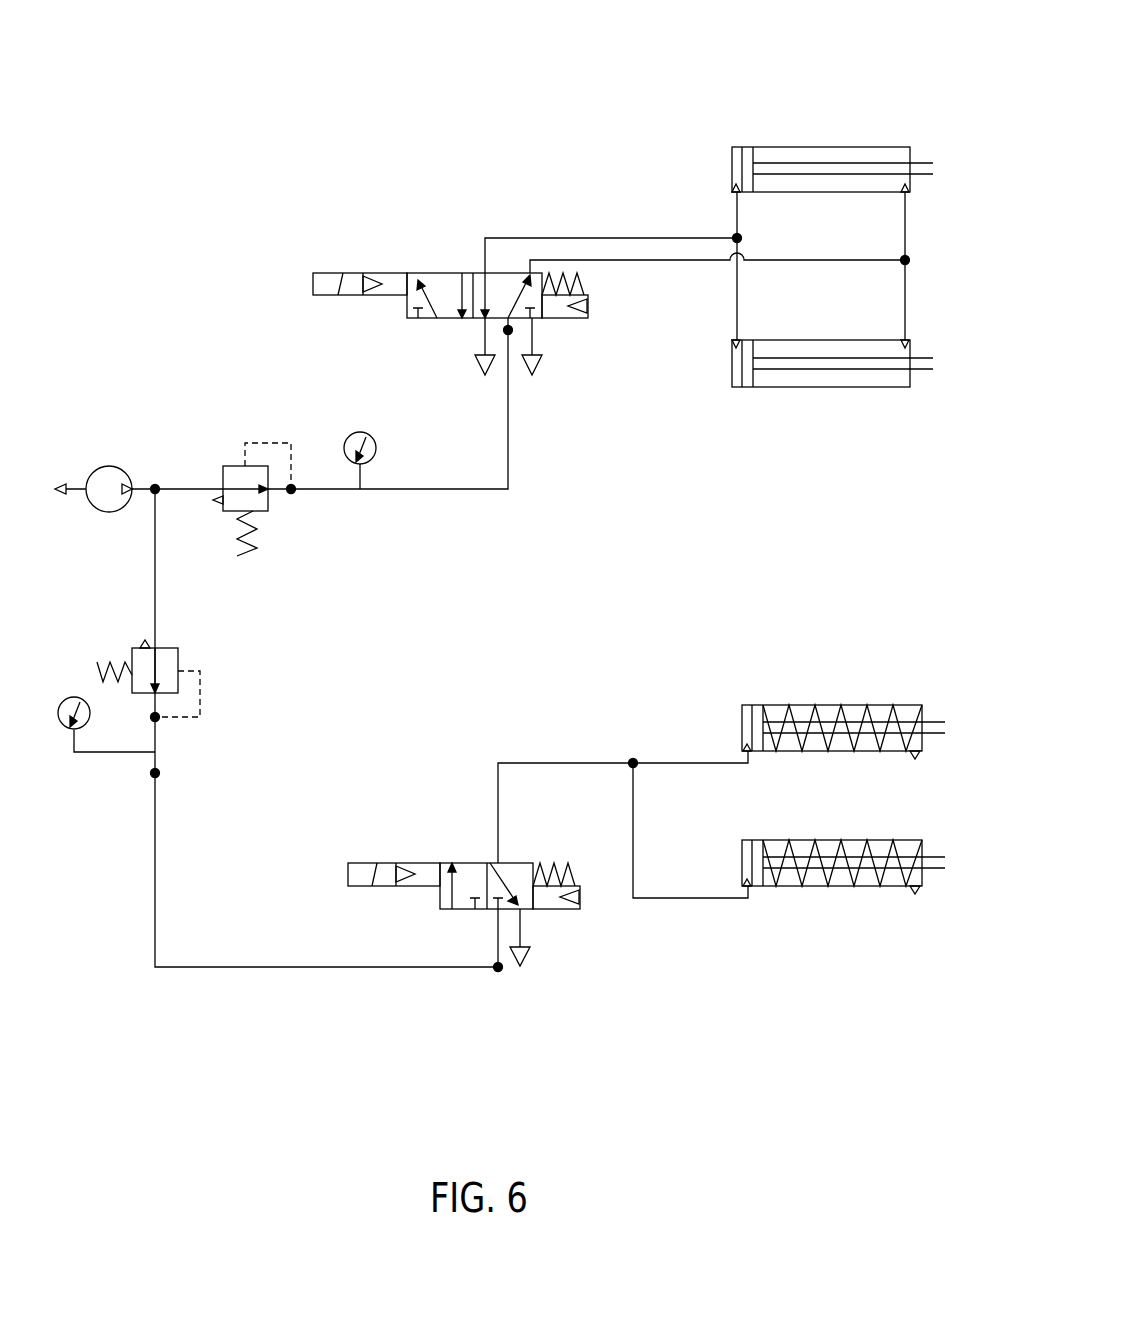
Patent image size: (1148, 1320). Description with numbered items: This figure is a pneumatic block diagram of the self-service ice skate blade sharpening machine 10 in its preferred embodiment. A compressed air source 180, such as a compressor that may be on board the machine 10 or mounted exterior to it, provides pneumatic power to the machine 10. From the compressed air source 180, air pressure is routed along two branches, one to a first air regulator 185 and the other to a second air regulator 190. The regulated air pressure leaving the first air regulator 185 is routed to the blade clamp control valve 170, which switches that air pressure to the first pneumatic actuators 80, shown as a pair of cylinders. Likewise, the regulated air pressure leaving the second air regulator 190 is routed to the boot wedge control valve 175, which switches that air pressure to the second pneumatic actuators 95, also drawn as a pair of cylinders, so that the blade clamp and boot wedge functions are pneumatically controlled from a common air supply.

The self-service ice skate blade sharpening machine 10 is at (238, 1046).
The first pneumatic actuators 80 is at (792, 170).
The second pneumatic actuators 95 is at (782, 715).
The blade clamp control valve 170 is at (472, 284).
The boot wedge control valve 175 is at (477, 877).
The compressed air source 180 is at (109, 470).
The first air regulator 185 is at (257, 453).
The second air regulator 190 is at (172, 662).